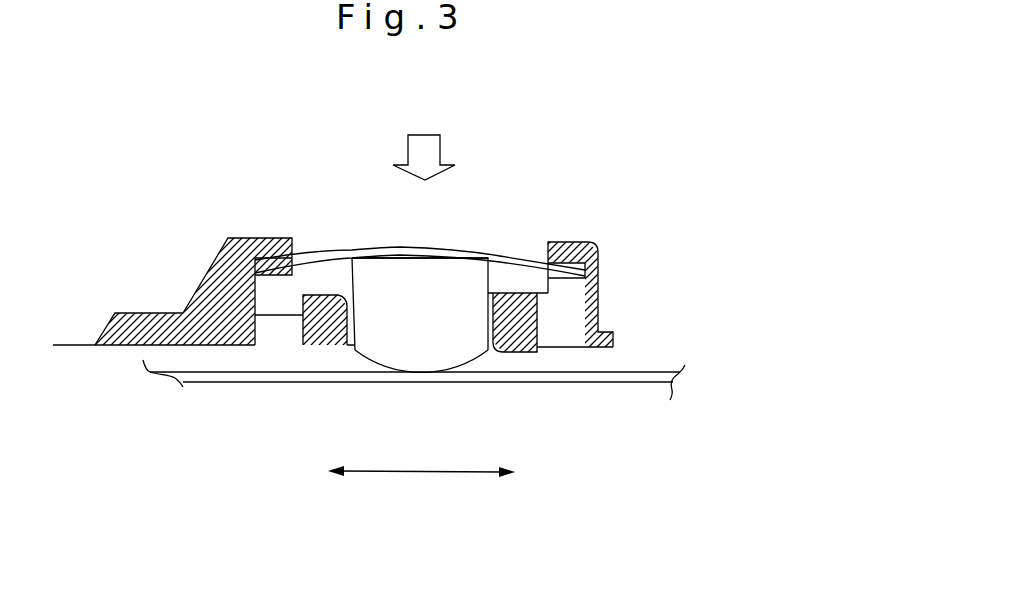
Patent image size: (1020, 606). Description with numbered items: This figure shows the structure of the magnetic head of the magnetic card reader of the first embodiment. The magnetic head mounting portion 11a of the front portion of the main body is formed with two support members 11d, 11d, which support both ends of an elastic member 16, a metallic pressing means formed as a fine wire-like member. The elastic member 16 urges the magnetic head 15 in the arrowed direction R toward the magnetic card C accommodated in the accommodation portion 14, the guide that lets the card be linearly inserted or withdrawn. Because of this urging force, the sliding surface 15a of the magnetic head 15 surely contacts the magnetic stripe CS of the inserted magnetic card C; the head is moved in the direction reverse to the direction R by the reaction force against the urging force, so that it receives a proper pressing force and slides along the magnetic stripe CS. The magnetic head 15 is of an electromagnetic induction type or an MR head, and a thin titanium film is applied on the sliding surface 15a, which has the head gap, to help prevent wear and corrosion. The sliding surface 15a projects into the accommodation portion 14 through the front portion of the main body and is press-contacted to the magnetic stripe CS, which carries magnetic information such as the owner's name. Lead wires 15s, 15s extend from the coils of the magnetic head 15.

The magnetic head mounting portion 11a is at (152, 332).
The support member 11d is at (242, 246).
The accommodation portion 14 is at (588, 362).
The magnetic head 15 is at (458, 280).
The lead wire 15s is at (418, 253).
The sliding surface 15a is at (415, 370).
The elastic member 16 is at (518, 256).
The arrowed direction R is at (425, 150).
The magnetic card C is at (647, 378).
The magnetic stripe CS is at (567, 370).